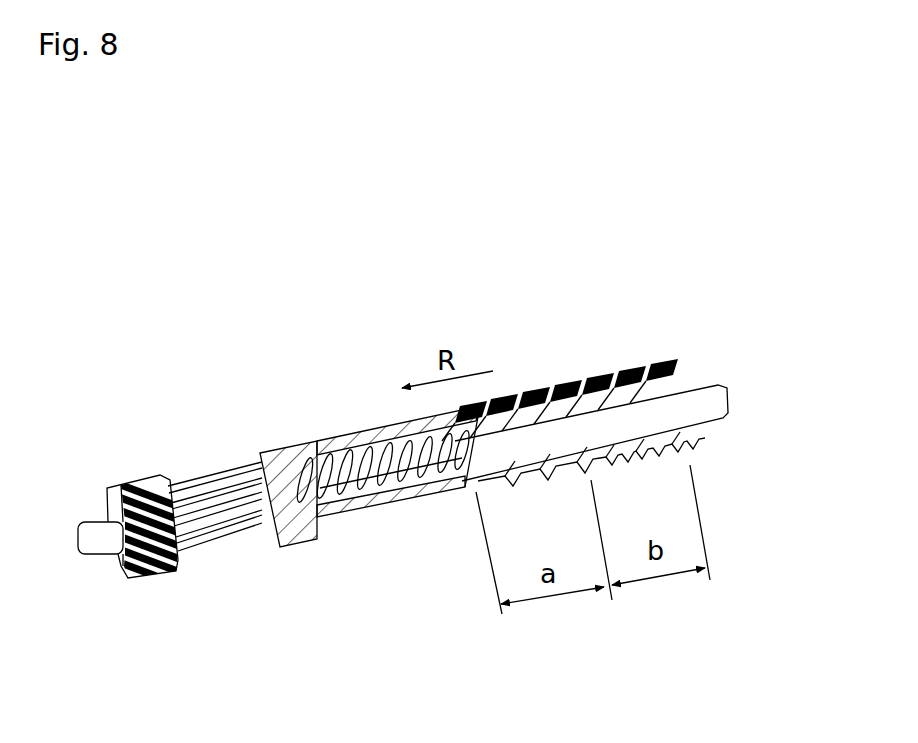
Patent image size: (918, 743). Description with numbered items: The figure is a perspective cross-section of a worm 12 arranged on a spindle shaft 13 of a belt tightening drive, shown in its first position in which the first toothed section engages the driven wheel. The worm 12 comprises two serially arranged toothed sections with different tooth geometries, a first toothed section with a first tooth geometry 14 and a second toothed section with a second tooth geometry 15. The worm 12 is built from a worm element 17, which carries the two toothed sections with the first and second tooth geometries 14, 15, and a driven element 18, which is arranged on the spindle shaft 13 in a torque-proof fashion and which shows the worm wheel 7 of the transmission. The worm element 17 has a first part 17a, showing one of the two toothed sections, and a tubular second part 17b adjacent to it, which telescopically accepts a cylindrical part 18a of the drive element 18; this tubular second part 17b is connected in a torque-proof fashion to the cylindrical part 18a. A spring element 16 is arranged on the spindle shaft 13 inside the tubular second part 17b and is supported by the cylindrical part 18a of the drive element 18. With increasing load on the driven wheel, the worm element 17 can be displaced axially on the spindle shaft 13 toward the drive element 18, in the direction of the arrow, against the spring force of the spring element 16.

The worm wheel 7 is at (70, 479).
The worm 12 is at (304, 301).
The spindle shaft 13 is at (636, 433).
The first tooth geometry 14 is at (539, 493).
The second tooth geometry 15 is at (652, 479).
The spring element 16 is at (370, 470).
The worm element 17 is at (393, 510).
The first part 17a is at (568, 363).
The tubular second part 17b is at (304, 422).
The driven element 18 is at (113, 590).
The cylindrical part 18a is at (175, 479).